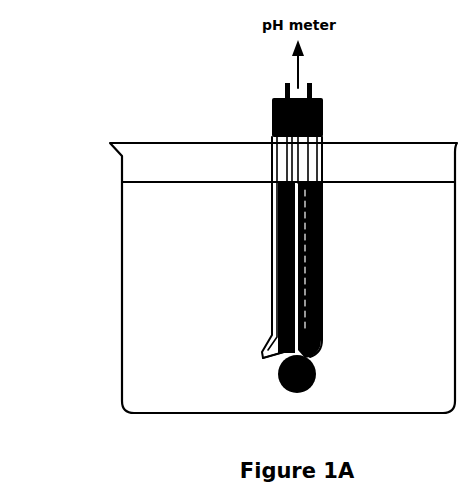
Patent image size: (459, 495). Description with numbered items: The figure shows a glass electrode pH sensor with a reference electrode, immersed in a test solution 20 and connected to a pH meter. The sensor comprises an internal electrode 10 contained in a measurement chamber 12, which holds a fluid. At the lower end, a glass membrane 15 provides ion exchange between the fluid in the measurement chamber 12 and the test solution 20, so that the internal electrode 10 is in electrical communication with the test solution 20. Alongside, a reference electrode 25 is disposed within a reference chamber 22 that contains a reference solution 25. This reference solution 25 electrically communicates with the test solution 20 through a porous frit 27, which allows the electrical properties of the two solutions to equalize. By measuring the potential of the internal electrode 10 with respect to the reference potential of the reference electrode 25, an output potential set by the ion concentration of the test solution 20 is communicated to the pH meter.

The internal electrode 10 is at (230, 238).
The measurement chamber 12 is at (320, 288).
The glass membrane 15 is at (316, 373).
The test solution 20 is at (394, 246).
The reference chamber 22 is at (276, 230).
The reference electrode 25 is at (272, 180).
The porous frit 27 is at (259, 337).